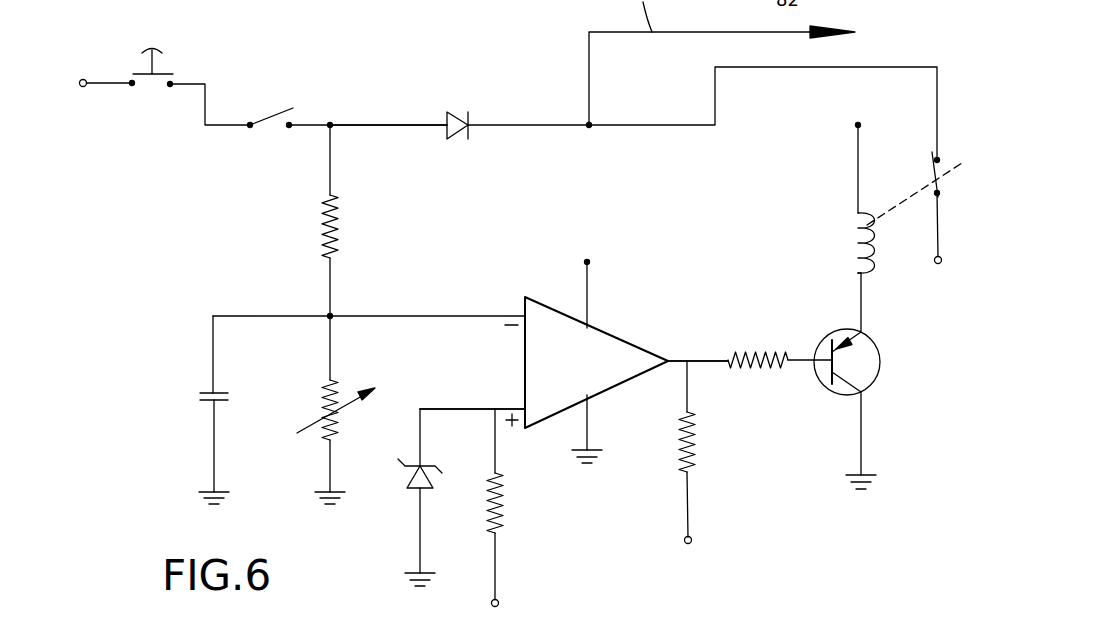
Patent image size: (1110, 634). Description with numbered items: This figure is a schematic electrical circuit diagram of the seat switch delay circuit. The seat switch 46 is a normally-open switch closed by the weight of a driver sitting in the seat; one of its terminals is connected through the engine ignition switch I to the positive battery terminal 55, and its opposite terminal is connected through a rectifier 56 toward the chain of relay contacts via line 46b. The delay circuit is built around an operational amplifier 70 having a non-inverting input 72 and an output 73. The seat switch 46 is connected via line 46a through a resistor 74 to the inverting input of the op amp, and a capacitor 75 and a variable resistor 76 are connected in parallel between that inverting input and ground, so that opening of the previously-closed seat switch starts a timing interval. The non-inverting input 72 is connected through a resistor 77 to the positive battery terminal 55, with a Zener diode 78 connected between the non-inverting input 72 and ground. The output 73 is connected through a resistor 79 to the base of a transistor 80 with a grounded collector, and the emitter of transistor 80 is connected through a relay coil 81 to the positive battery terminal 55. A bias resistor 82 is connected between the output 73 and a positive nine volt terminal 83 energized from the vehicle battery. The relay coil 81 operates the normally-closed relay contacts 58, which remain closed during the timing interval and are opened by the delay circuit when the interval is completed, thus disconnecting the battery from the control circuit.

The positive battery terminal 55 is at (82, 79).
The engine ignition switch I is at (166, 31).
The seat switch 46 is at (275, 115).
The line 46a is at (328, 162).
The line 46b is at (375, 122).
The rectifier 56 is at (471, 118).
The resistor 74 is at (338, 226).
The capacitor 75 is at (205, 397).
The variable resistor 76 is at (325, 395).
The operational amplifier 70 is at (627, 345).
The non-inverting input 72 is at (522, 405).
The output 73 is at (670, 358).
The Zener diode 78 is at (429, 462).
The resistor 77 is at (501, 513).
The bias resistor 82 is at (695, 442).
The +9 volt terminal 83 is at (692, 537).
The resistor 79 is at (751, 348).
The transistor 80 is at (823, 385).
The relay coil 81 is at (853, 240).
The relay contacts 58 is at (931, 168).